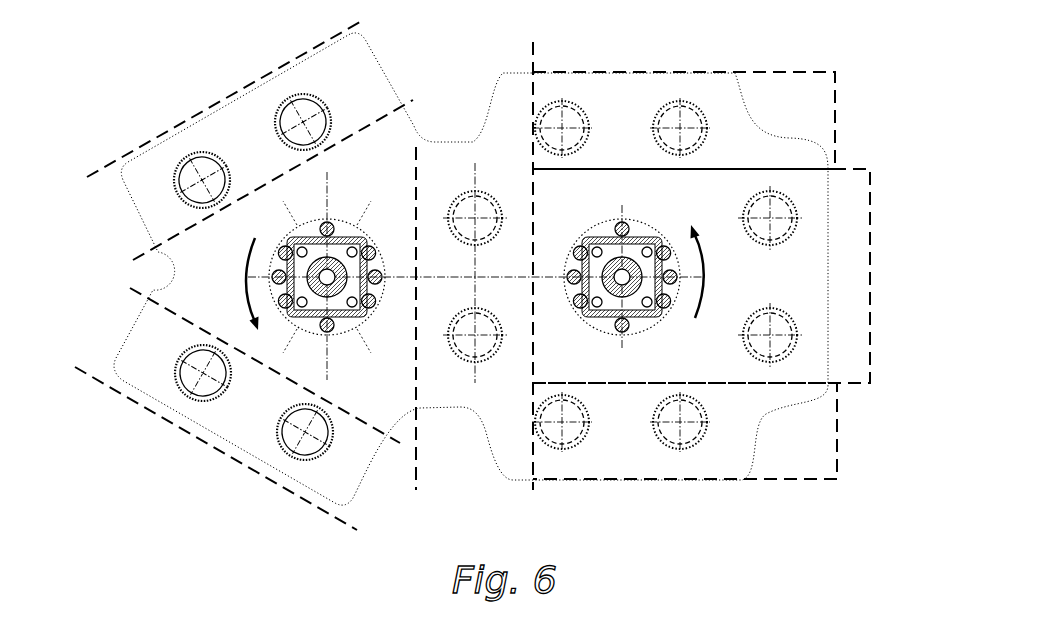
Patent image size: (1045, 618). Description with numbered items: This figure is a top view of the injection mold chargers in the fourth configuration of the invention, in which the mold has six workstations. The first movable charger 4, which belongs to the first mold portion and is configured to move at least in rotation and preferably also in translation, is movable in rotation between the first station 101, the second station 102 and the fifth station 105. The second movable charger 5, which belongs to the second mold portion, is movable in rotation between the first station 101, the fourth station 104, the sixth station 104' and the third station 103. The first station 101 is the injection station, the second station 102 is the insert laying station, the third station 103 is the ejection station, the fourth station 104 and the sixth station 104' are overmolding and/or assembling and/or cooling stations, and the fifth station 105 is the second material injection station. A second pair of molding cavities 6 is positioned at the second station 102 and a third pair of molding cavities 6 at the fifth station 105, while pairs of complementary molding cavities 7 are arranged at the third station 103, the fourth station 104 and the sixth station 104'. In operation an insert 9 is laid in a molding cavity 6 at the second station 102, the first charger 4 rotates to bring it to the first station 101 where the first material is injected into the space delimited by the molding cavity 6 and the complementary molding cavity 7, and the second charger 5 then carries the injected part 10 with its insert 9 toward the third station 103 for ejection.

The first movable charger 4 is at (203, 494).
The second movable charger 5 is at (670, 504).
The molding cavity 6 is at (301, 118).
The complementary molding cavity 7 is at (563, 125).
The insert 9 is at (278, 109).
The injected part 10 is at (584, 112).
The first station 101 is at (416, 488).
The second station 102 is at (266, 130).
The third station 103 is at (838, 72).
The fourth station 104 is at (736, 276).
The sixth station 104' is at (725, 431).
The fifth station 105 is at (218, 398).